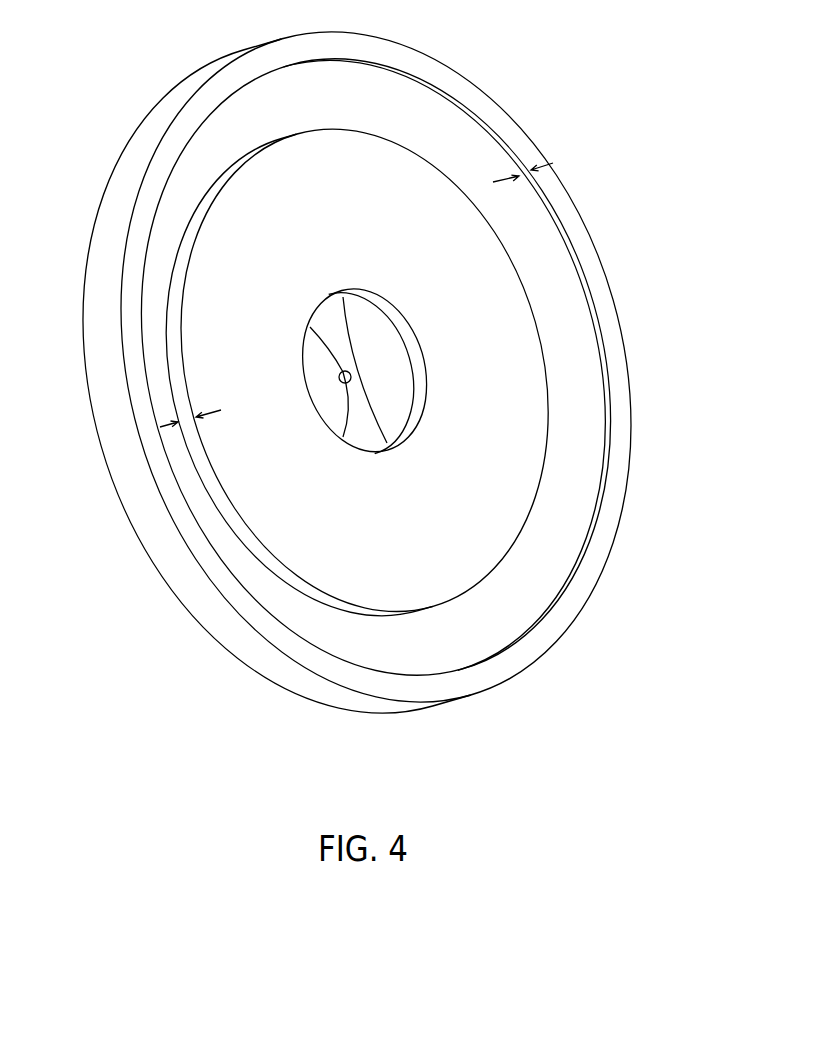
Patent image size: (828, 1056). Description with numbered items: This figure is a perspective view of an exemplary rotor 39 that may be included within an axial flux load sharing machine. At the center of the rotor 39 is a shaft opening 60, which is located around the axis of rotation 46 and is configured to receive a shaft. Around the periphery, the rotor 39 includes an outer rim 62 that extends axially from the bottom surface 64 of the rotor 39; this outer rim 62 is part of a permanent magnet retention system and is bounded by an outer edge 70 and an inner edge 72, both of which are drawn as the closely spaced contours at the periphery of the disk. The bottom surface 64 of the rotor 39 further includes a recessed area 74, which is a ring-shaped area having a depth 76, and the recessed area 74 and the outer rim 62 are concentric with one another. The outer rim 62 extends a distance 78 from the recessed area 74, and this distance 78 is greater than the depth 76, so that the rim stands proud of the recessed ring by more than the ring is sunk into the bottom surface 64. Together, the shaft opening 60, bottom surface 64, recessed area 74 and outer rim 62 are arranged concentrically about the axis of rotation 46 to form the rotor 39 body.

The rotor 39 is at (512, 120).
The axis of rotation 46 is at (347, 370).
The shaft opening 60 is at (360, 384).
The outer rim 62 is at (608, 316).
The bottom surface 64 is at (525, 222).
The outer edge 70 is at (631, 464).
The inner edge 72 is at (605, 427).
The recessed area 74 is at (520, 602).
The depth 76 is at (197, 425).
The distance 78 is at (540, 176).